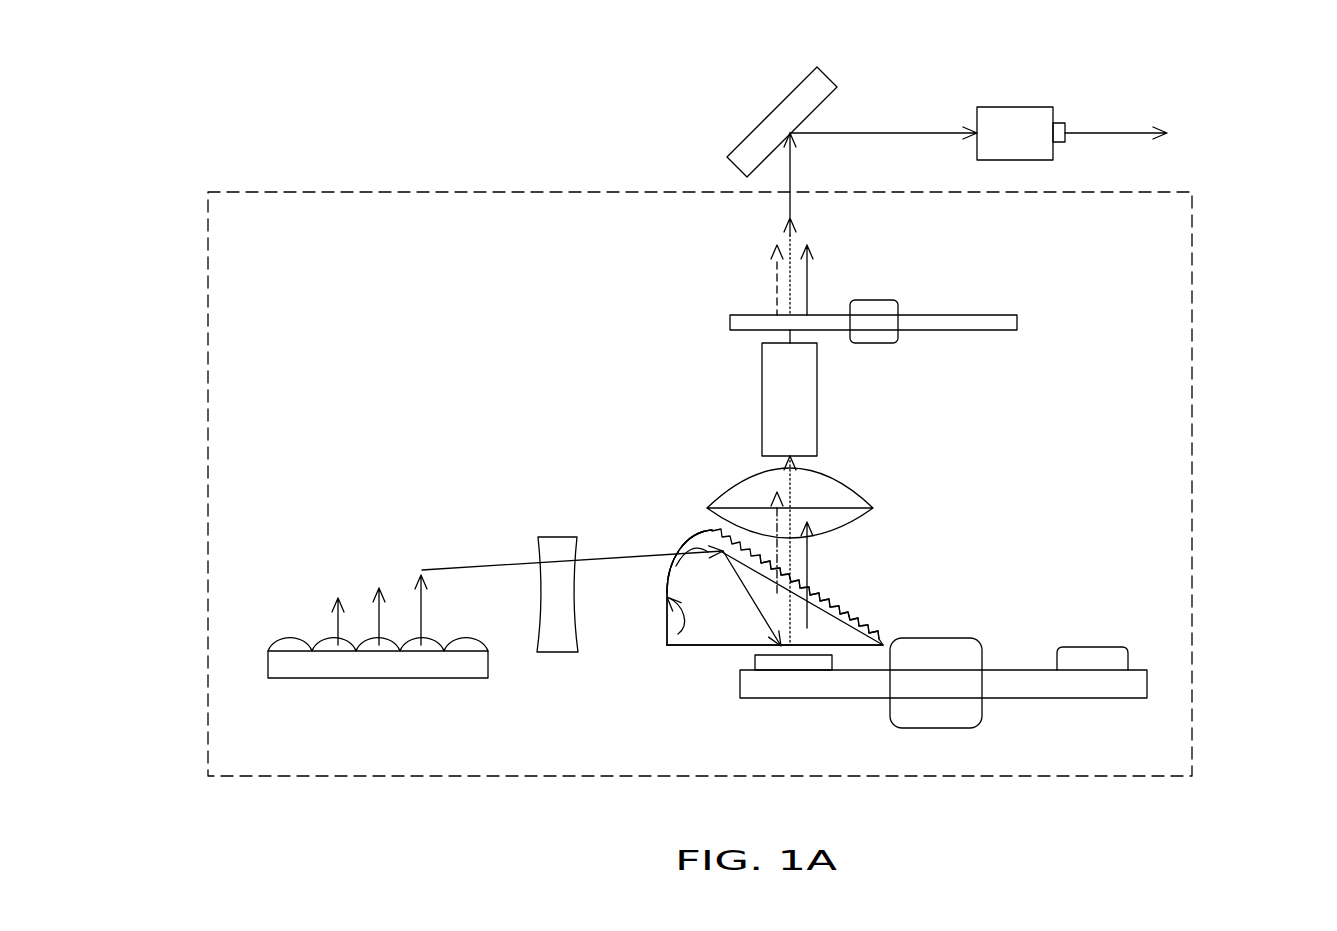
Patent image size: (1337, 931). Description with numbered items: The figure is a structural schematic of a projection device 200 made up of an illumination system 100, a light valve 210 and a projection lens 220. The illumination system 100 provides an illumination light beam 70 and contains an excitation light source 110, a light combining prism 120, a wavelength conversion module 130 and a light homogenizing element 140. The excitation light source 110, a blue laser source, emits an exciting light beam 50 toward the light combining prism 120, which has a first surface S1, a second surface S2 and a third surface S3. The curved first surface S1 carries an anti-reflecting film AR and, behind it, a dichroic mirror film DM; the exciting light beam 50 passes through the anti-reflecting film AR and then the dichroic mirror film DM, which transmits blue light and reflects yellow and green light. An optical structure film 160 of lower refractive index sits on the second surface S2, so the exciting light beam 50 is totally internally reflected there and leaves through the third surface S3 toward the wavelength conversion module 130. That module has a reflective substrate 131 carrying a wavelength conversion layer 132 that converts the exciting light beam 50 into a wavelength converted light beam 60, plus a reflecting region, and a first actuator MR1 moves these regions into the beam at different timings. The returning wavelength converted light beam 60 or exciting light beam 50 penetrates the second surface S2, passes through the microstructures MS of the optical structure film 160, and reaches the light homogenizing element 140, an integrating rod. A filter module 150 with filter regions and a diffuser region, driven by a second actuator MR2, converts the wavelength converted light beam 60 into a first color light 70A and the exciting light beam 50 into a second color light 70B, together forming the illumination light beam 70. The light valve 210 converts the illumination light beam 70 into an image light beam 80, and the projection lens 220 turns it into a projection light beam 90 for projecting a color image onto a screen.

The illumination system 100 is at (208, 733).
The excitation light source 110 is at (333, 663).
The light combining prism 120 is at (683, 640).
The wavelength conversion module 130 is at (1031, 688).
The substrate 131 is at (1130, 685).
The wavelength conversion layer 132 is at (1120, 658).
The light homogenizing element 140 is at (802, 407).
The filter module 150 is at (1020, 323).
The optical structure film 160 is at (823, 600).
The projection device 200 is at (1013, 425).
The light valve 210 is at (777, 118).
The projection lens 220 is at (1015, 120).
The exciting light beam 50 is at (427, 608).
The wavelength converted light beam 60 is at (778, 515).
The illumination light beam 70 is at (793, 170).
The first color light 70A is at (785, 240).
The second color light 70B is at (807, 288).
The image light beam 80 is at (902, 130).
The projection light beam 90 is at (1115, 130).
The first actuator MR1 is at (953, 707).
The second actuator MR2 is at (877, 310).
The microstructures MS is at (860, 618).
The first surface S1 is at (651, 628).
The second surface S2 is at (730, 537).
The third surface S3 is at (696, 661).
The anti-reflecting film AR is at (655, 574).
The dichroic mirror film DM is at (678, 634).